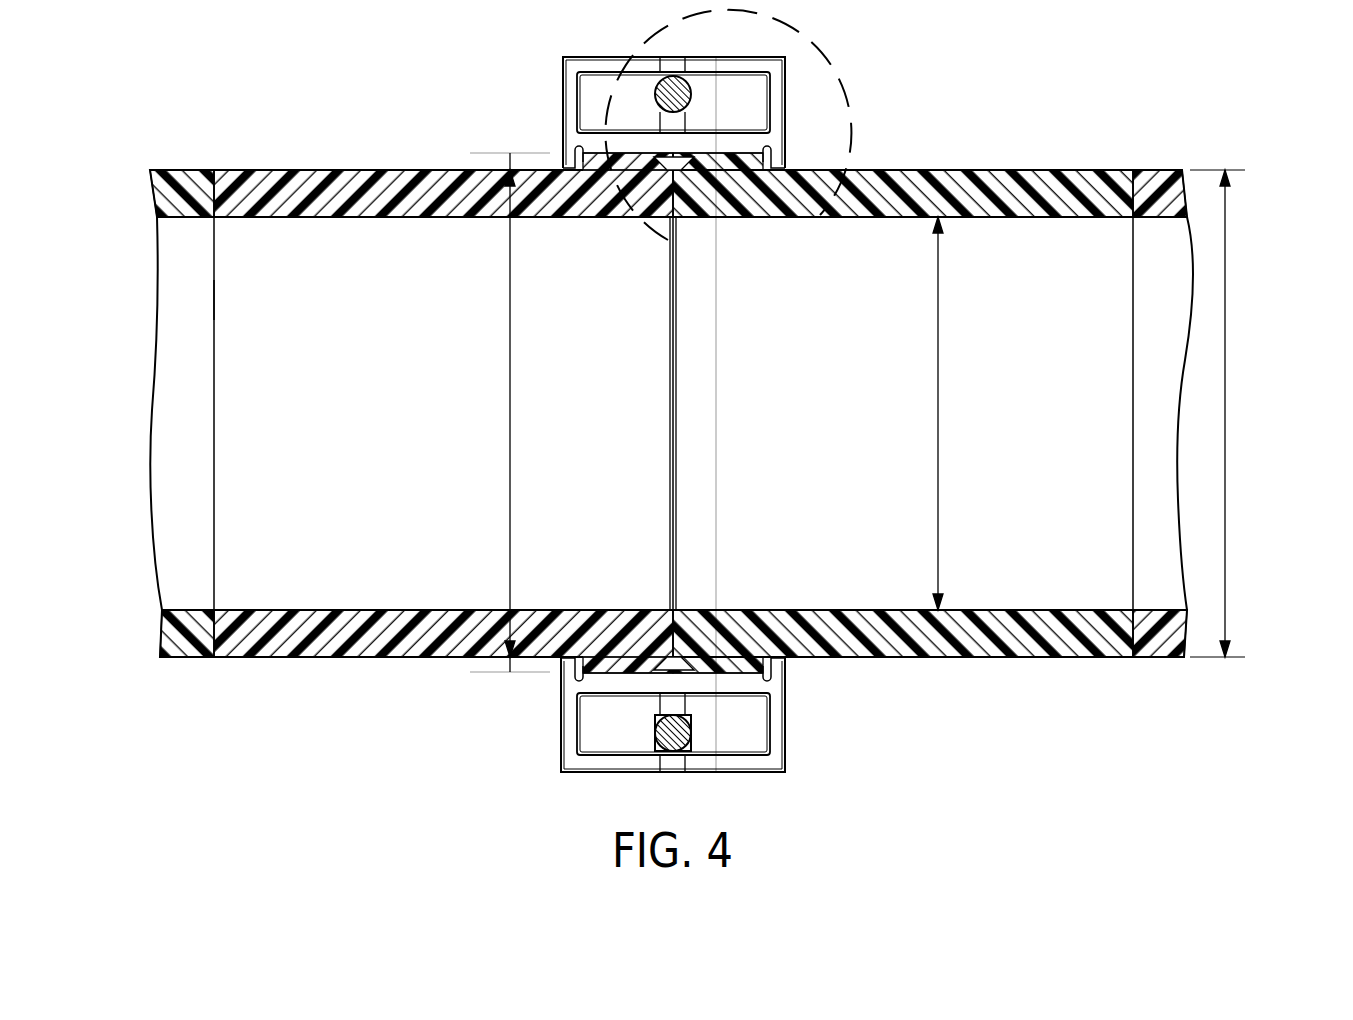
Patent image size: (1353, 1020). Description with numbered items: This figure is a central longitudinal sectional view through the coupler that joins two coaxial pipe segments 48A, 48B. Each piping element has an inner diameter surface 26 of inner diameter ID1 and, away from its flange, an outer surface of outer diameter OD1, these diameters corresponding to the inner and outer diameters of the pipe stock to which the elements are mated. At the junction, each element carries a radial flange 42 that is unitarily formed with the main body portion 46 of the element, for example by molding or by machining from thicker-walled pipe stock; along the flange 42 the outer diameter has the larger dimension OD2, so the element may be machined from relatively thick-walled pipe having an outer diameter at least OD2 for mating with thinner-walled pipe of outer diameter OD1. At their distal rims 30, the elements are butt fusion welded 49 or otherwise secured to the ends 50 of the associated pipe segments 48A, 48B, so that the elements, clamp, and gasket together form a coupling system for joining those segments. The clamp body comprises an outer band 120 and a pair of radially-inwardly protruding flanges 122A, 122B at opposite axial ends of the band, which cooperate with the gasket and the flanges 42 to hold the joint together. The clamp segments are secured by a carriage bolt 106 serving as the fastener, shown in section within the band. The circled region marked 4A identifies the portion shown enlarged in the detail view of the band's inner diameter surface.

The inner diameter surface 26 is at (1013, 608).
The second end 30 is at (214, 311).
The flange 42 is at (743, 661).
The main body portion 46 is at (919, 642).
The pipe segment 48A is at (183, 666).
The pipe segment 48B is at (933, 484).
The butt fusion weld 49 is at (244, 441).
The pipe segment end 50 is at (214, 372).
The carriage bolt 106 is at (691, 733).
The outer band 120 is at (608, 683).
The radially-inwardly protruding flange 122A is at (573, 160).
The radially-inwardly protruding flange 122B is at (787, 160).
The detail view indicator 4A is at (668, 240).
The outer diameter OD1 is at (1226, 336).
The flange outer diameter OD2 is at (508, 289).
The inner diameter ID1 is at (940, 333).